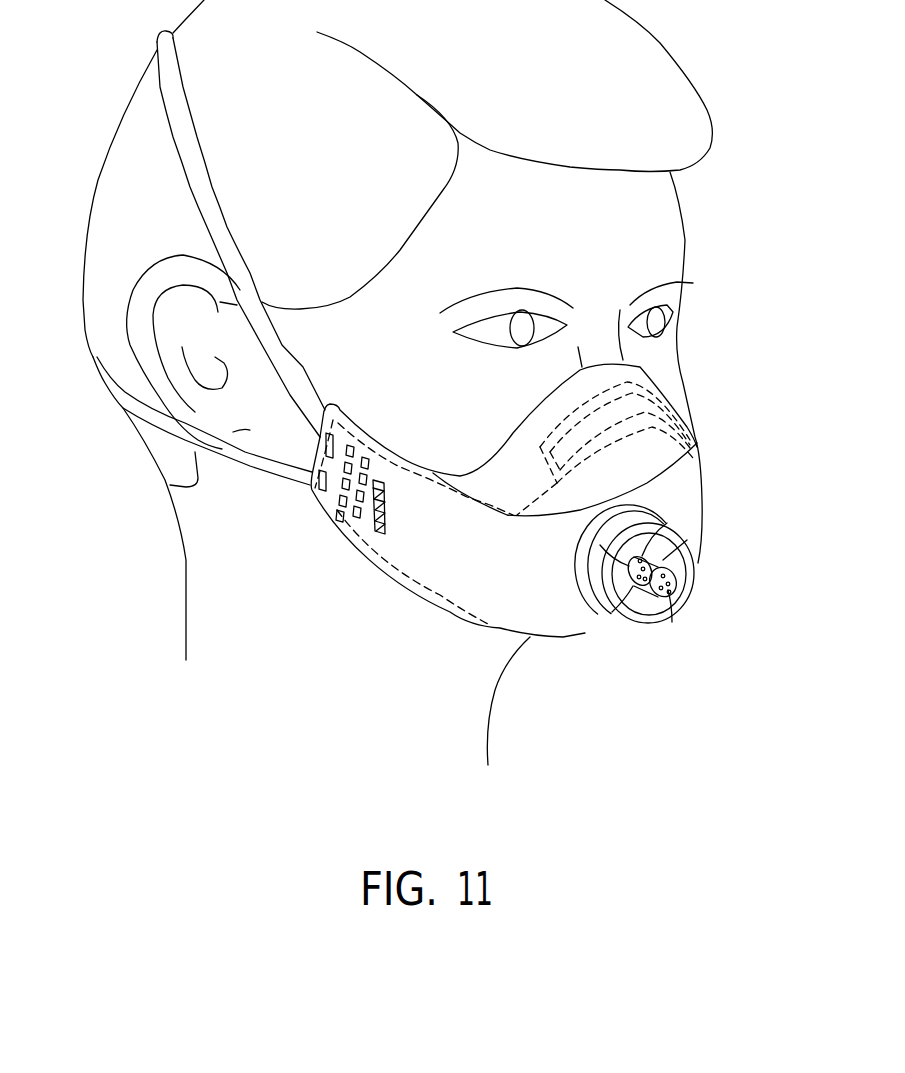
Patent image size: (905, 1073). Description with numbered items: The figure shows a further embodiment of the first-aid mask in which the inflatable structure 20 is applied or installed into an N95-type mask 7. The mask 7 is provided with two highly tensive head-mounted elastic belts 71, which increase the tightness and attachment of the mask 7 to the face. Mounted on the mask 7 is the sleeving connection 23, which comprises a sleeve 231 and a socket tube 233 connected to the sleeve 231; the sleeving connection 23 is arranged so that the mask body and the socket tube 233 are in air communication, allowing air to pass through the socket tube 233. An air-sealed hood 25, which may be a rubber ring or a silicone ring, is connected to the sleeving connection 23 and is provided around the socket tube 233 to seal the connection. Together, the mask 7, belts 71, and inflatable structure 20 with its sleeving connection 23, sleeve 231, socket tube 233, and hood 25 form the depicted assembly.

The N95-type mask 7 is at (398, 590).
The head-mounted elastic belt 71 is at (270, 468).
The inflatable structure 20 is at (612, 584).
The sleeving connection 23 is at (655, 500).
The sleeve 231 is at (583, 575).
The socket tube 233 is at (640, 597).
The air-sealed hood 25 is at (593, 613).